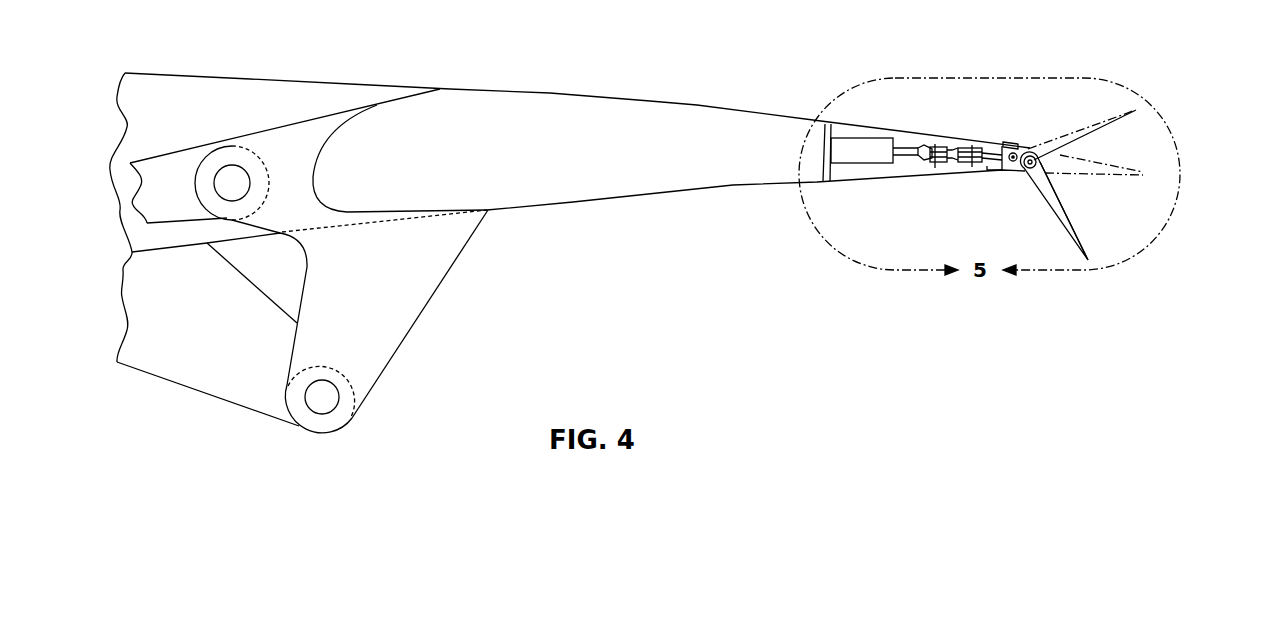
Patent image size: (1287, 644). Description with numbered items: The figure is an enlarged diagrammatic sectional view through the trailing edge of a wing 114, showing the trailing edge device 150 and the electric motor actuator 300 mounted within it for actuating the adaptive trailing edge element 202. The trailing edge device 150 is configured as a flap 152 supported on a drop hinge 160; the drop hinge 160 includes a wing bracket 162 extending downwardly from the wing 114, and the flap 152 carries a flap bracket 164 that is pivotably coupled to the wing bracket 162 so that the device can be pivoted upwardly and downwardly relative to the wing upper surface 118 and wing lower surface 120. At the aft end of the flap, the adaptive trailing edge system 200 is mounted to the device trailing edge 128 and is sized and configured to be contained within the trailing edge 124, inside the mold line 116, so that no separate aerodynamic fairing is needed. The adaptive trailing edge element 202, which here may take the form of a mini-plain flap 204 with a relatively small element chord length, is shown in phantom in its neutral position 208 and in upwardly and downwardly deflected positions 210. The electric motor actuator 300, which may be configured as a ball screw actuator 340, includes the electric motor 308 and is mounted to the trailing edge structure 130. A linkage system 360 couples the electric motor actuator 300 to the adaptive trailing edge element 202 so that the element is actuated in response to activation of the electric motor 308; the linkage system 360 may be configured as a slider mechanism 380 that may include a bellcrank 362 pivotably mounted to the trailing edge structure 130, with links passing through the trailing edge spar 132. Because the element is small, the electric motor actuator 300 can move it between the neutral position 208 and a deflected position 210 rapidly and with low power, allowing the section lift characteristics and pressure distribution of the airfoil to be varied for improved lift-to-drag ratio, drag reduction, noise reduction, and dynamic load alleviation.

The wing 114 is at (185, 74).
The mold line 116 is at (307, 82).
The wing upper surface 118 is at (397, 86).
The wing lower surface 120 is at (575, 202).
The trailing edge 124 is at (1066, 97).
The device trailing edge 128 is at (600, 97).
The trailing edge structure 130 is at (823, 142).
The trailing edge spar 132 is at (997, 177).
The trailing edge device 150 is at (697, 105).
The flap 152 is at (500, 90).
The drop hinge 160 is at (318, 433).
The wing bracket 162 is at (217, 397).
The flap bracket 164 is at (425, 313).
The adaptive trailing edge system 200 is at (998, 105).
The adaptive trailing edge element 202 is at (1072, 213).
The mini-plain flap 204 is at (1085, 243).
The neutral position 208 is at (1133, 167).
The deflected position 210 is at (1108, 128).
The electric motor actuator 300 is at (857, 145).
The electric motor 308 is at (847, 163).
The ball screw actuator 340 is at (880, 140).
The linkage system 360 is at (938, 173).
The bellcrank 362 is at (920, 162).
The slider mechanism 380 is at (940, 144).